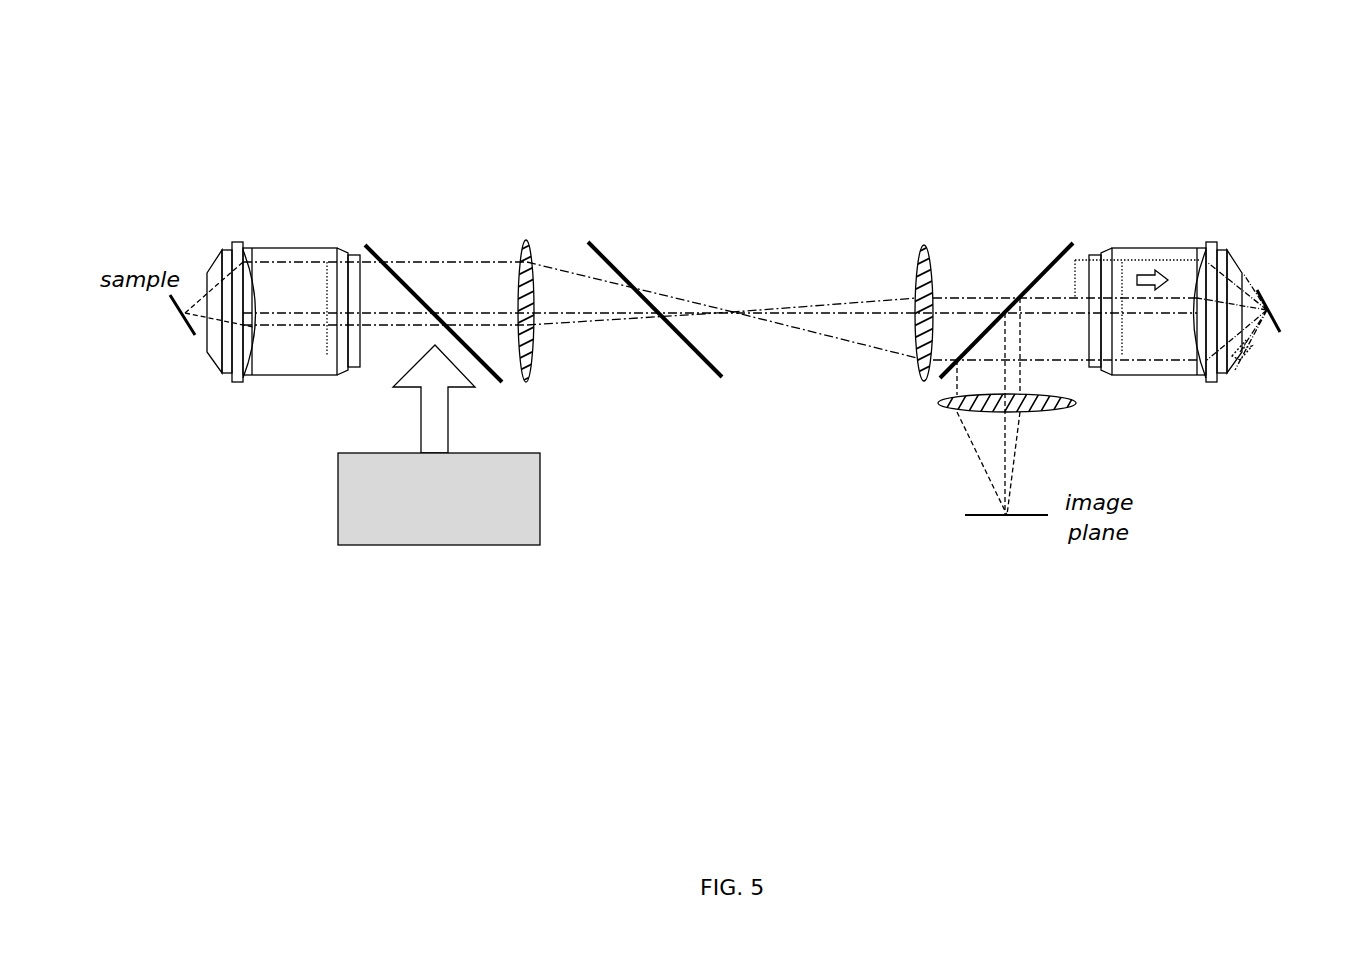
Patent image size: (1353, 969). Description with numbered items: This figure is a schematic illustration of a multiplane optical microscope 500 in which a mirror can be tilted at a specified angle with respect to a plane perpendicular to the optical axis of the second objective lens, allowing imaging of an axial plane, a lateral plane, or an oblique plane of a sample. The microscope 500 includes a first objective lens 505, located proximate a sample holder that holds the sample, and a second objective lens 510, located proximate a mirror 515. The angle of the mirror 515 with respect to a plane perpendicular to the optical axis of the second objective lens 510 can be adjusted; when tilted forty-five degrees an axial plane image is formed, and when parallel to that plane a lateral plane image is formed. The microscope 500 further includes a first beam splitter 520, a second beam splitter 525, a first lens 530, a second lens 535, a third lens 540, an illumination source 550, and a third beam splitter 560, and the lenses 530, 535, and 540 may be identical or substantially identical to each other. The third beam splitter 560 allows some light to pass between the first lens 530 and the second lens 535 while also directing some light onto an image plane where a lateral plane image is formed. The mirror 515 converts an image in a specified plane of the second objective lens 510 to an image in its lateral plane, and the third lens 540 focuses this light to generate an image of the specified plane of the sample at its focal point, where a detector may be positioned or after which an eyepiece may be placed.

The multiplane optical microscope 500 is at (1230, 70).
The first objective lens 505 is at (292, 377).
The second objective lens 510 is at (1165, 377).
The mirror 515 is at (1262, 292).
The first beam splitter 520 is at (370, 243).
The second beam splitter 525 is at (1053, 260).
The first lens 530 is at (522, 250).
The second lens 535 is at (927, 243).
The third lens 540 is at (938, 402).
The illumination source 550 is at (540, 503).
The third beam splitter 560 is at (708, 363).